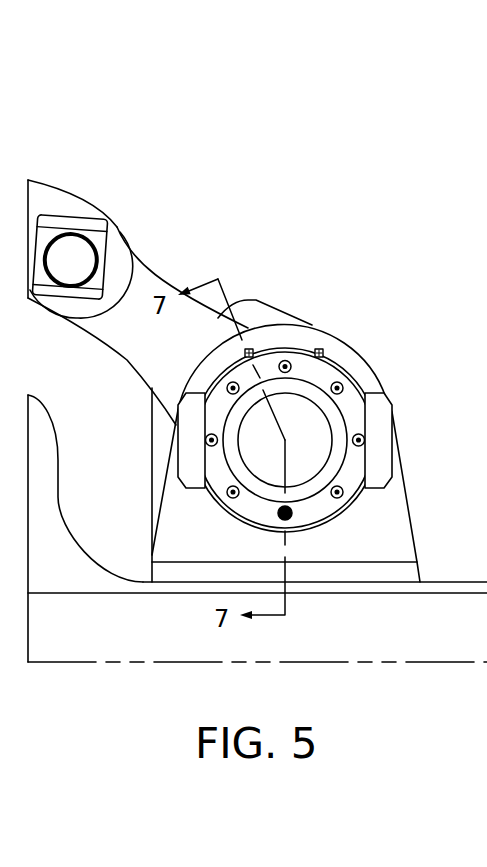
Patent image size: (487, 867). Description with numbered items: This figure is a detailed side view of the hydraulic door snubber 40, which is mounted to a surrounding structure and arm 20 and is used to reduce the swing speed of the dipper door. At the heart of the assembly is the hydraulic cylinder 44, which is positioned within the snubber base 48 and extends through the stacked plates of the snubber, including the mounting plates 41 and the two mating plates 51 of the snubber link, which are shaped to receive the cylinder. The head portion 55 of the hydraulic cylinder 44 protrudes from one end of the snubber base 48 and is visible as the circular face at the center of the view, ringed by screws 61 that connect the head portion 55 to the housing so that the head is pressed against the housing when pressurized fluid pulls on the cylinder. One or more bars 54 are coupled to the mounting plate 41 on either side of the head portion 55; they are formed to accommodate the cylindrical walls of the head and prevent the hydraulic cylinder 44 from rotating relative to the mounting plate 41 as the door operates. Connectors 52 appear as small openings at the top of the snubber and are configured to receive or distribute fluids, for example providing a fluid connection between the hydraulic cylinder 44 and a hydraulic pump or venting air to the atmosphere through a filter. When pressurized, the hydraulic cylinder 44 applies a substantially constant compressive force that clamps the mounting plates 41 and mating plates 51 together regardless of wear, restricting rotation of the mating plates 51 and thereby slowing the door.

The robotic arm 20 is at (76, 166).
The hydraulic door snubber 40 is at (282, 198).
The mounting plate 41 is at (395, 503).
The hydraulic cylinder 44 is at (300, 467).
The snubber base 48 is at (408, 570).
The mating plate 51 is at (147, 278).
The connector 52 is at (252, 351).
The bar 54 is at (380, 412).
The head portion 55 is at (247, 507).
The screw 61 is at (341, 384).